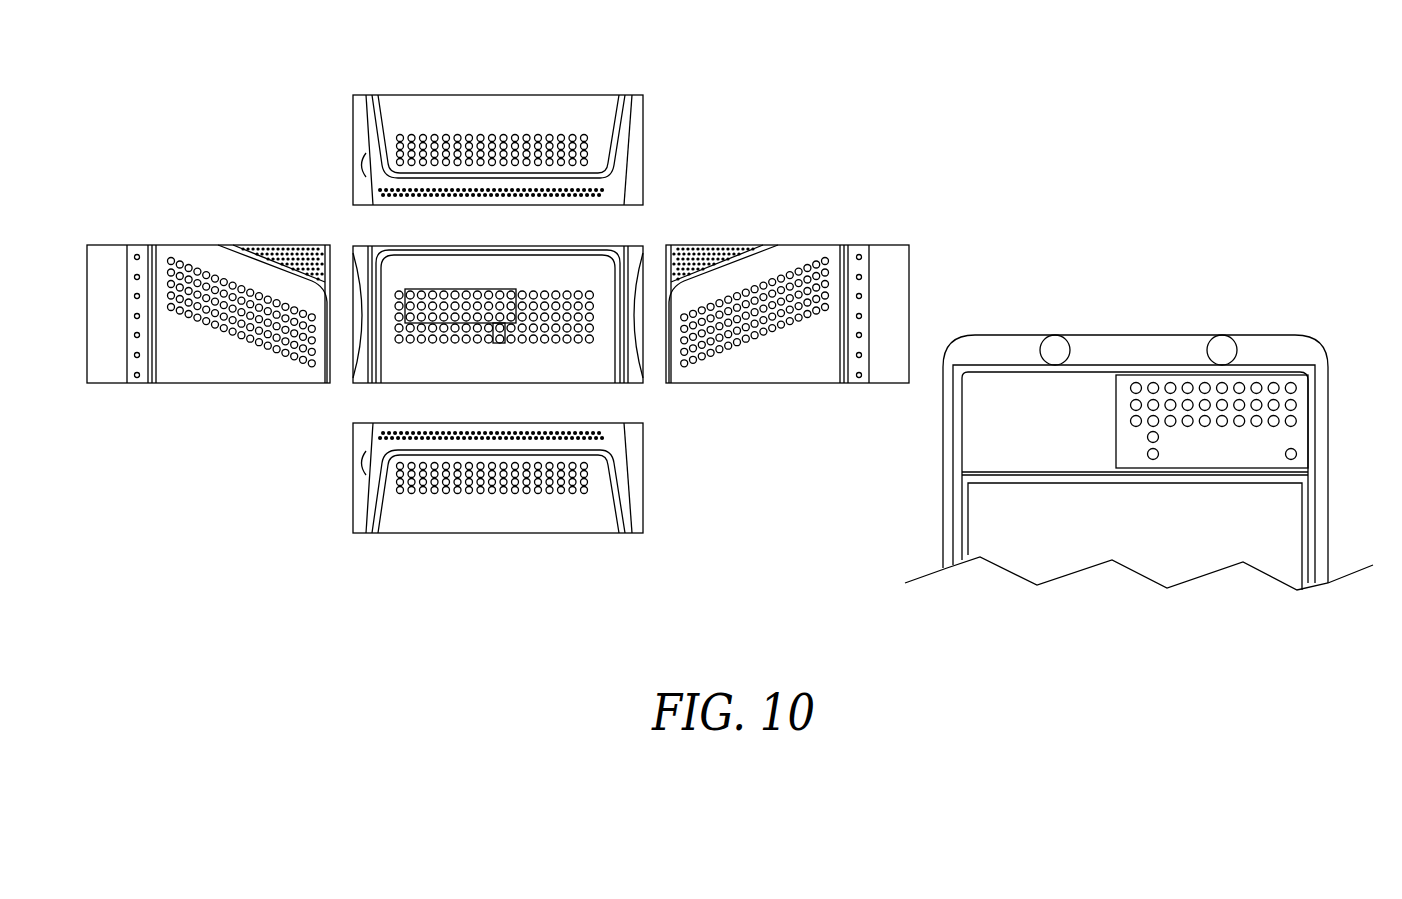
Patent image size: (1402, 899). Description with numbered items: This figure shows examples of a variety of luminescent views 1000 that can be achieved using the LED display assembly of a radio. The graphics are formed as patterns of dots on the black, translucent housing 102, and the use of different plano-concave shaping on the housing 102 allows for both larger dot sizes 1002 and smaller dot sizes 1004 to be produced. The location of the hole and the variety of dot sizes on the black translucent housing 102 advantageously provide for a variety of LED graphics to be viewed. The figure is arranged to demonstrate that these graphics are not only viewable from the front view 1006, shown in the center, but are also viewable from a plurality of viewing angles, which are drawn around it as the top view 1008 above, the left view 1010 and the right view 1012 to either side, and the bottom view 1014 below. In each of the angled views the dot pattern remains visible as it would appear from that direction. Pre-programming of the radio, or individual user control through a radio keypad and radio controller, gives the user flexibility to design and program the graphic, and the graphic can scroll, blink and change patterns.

The luminescent views 1000 is at (1134, 498).
The black translucent housing 102 is at (975, 445).
The larger dot sizes 1002 is at (1251, 500).
The smaller dot sizes 1004 is at (1297, 421).
The front view 1006 is at (474, 246).
The top view 1008 is at (497, 95).
The left view 1010 is at (208, 245).
The right view 1012 is at (722, 245).
The bottom view 1014 is at (426, 533).